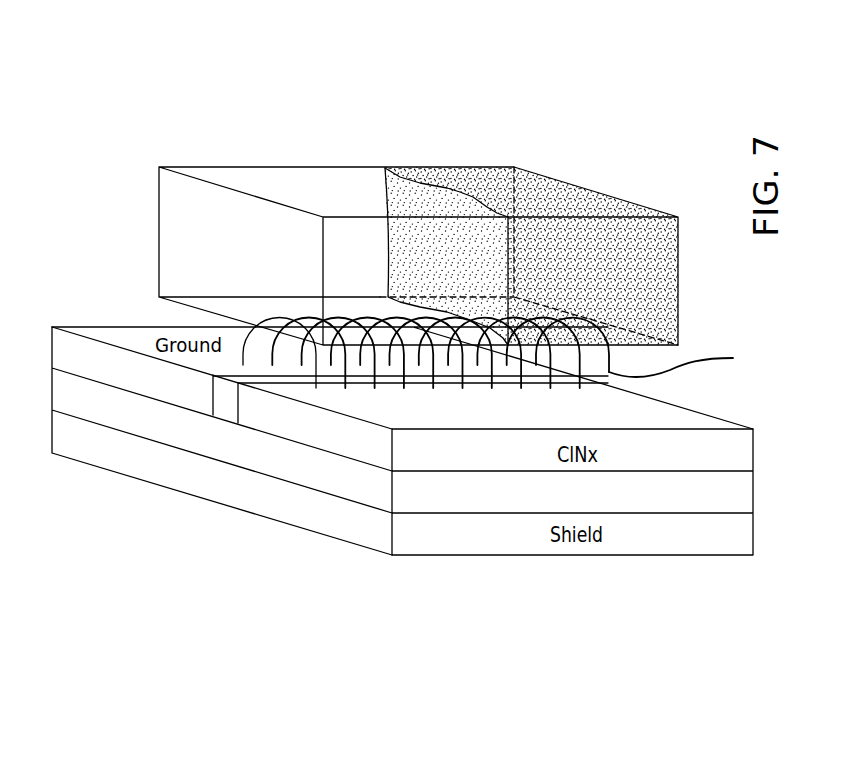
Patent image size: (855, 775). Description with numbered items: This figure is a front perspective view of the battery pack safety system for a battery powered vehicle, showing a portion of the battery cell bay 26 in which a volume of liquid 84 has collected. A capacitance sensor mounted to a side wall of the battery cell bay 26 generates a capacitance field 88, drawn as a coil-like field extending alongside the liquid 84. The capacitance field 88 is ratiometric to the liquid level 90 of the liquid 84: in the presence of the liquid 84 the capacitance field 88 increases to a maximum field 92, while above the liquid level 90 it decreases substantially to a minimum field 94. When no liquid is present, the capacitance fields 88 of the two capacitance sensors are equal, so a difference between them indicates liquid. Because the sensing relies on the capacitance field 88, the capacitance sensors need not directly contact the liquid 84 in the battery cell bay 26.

The battery cell bay 26 is at (285, 178).
The liquid 84 is at (492, 178).
The capacitance field 88 is at (445, 345).
The liquid level 90 is at (455, 192).
The maximum field 92 is at (686, 359).
The minimum field 94 is at (297, 325).